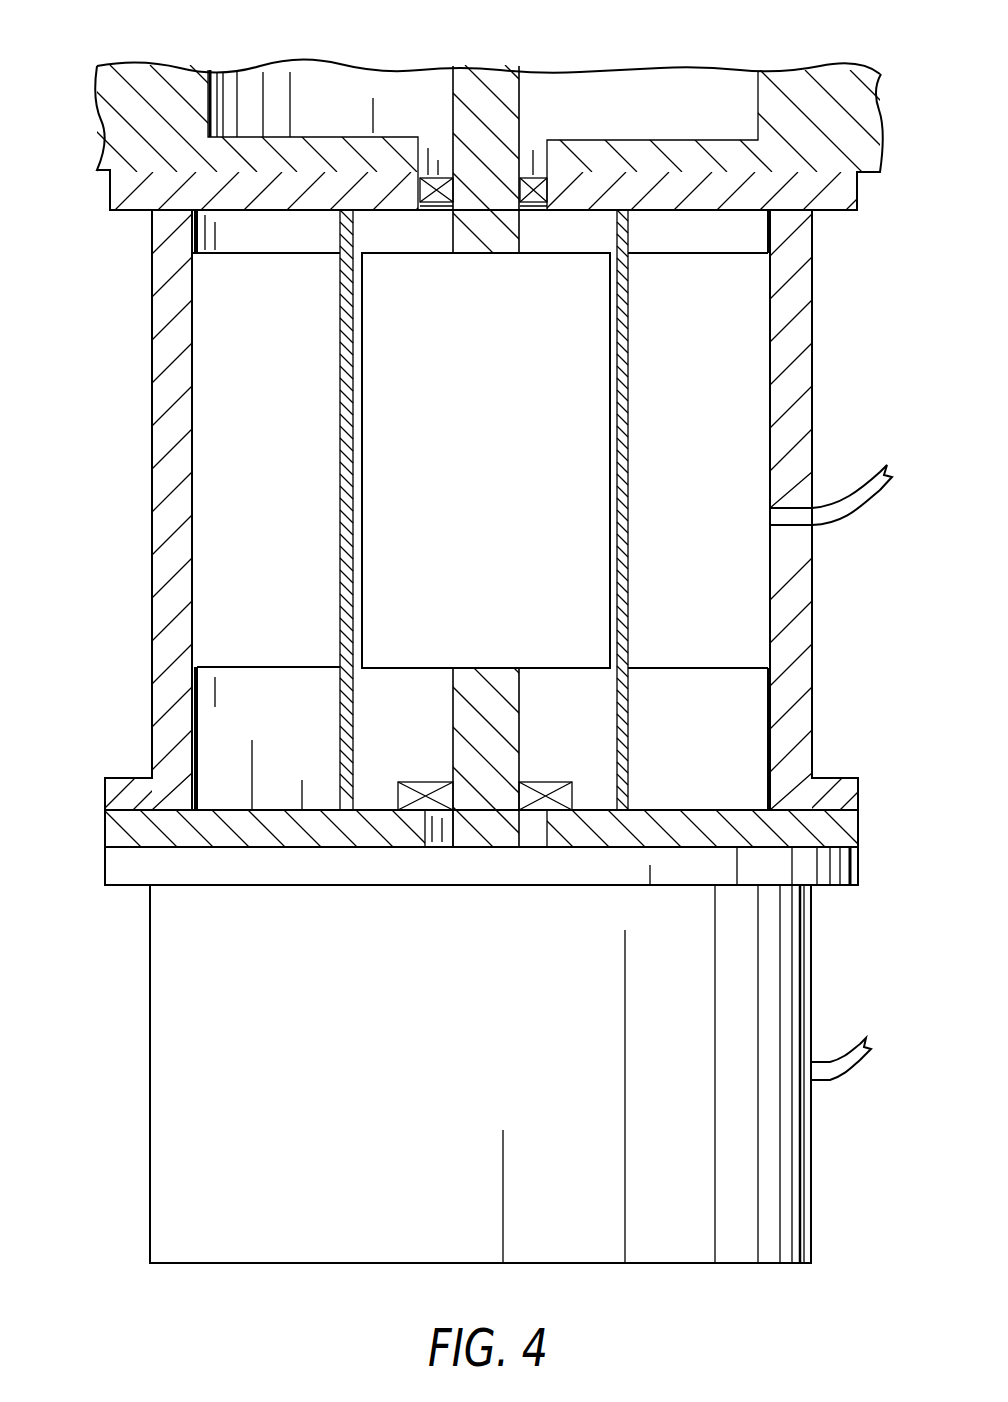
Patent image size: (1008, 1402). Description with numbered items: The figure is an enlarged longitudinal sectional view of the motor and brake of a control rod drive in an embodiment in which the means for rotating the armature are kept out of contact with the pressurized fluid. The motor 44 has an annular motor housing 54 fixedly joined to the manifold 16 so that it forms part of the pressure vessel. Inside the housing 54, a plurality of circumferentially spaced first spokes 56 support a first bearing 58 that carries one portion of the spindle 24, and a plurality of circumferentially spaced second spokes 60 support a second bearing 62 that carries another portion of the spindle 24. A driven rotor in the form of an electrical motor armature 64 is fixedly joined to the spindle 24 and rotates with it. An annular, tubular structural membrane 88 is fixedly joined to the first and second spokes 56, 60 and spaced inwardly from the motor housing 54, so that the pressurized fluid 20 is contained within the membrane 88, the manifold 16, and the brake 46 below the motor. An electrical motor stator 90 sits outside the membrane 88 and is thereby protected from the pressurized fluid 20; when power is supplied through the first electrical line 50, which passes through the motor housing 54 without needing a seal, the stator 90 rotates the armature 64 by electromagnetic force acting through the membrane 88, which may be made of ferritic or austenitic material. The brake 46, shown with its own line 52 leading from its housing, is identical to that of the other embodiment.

The manifold 16 is at (178, 80).
The pressurized fluid 20 is at (322, 80).
The spindle 24 is at (545, 80).
The motor 44 is at (148, 374).
The brake 46 is at (146, 1027).
The first electrical line 50 is at (838, 500).
The lower port 52 is at (840, 1050).
The motor housing 54 is at (814, 320).
The first spokes 56 is at (383, 215).
The first bearing 58 is at (532, 213).
The second spokes 60 is at (373, 803).
The second bearing 62 is at (553, 780).
The armature 64 is at (418, 670).
The structural membrane 88 is at (338, 757).
The stator 90 is at (240, 670).